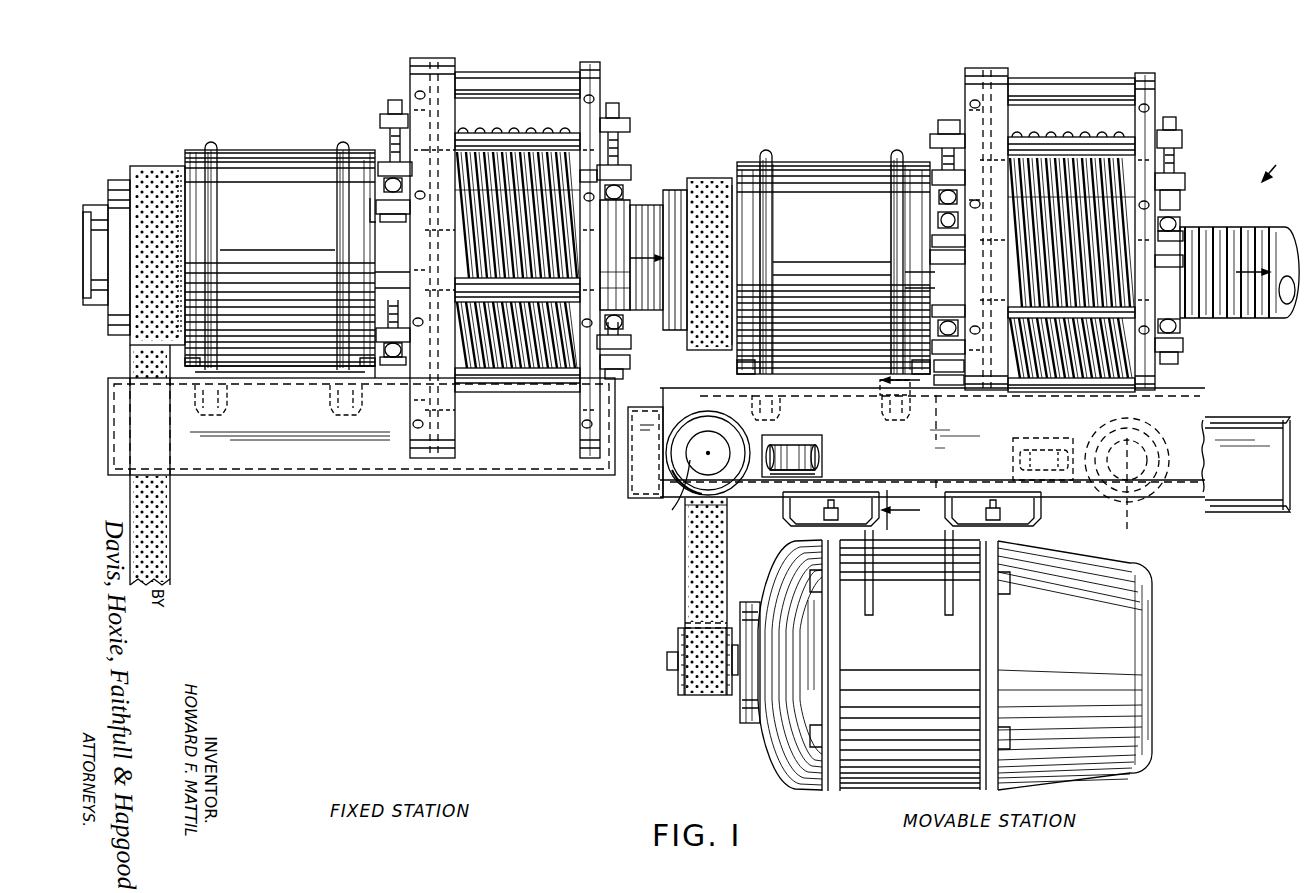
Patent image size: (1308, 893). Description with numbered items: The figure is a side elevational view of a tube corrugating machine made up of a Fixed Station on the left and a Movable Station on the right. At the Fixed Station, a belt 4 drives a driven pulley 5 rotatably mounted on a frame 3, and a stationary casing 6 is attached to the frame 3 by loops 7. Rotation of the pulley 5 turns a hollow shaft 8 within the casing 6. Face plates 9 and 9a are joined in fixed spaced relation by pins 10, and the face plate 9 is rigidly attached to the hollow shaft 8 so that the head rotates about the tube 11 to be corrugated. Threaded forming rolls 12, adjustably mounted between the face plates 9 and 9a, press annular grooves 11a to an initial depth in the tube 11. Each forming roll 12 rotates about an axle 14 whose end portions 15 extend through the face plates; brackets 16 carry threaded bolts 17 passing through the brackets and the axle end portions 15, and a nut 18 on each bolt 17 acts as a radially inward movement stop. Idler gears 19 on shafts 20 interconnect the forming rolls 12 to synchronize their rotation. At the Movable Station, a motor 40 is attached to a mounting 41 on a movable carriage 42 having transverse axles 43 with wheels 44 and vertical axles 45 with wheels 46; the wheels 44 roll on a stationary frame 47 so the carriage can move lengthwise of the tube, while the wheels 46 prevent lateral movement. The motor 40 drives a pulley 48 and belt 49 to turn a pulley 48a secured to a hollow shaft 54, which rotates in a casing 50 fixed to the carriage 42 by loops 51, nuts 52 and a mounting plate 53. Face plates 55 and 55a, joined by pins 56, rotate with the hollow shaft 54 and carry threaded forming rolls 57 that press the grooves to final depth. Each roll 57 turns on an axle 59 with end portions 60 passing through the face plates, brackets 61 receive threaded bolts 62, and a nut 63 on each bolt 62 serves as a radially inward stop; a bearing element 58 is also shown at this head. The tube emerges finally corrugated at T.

The frame 3 is at (208, 462).
The belt 4 is at (168, 530).
The driven pulley 5 is at (135, 170).
The stationary casing 6 is at (277, 154).
The loops 7 is at (212, 143).
The hollow shaft 8 is at (379, 155).
The face plate 9 is at (430, 58).
The face plate 9a is at (590, 65).
The pins 10 is at (508, 75).
The tube 11 is at (100, 210).
The annular grooves 11a is at (453, 276).
The threaded forming rolls 12 is at (548, 135).
The axle 14 is at (595, 176).
The axle end portions 15 is at (386, 140).
The brackets 16 is at (392, 116).
The threaded bolts 17 is at (610, 106).
The nut 18 is at (606, 197).
The idler gears 19 is at (458, 118).
The shafts 20 is at (519, 132).
The motor 40 is at (892, 780).
The mounting 41 is at (1038, 522).
The movable frame or carriage 42 is at (1174, 500).
The transverse axles 43 is at (691, 462).
The wheels 44 is at (722, 486).
The vertical axles 45 is at (816, 468).
The wheels 46 is at (818, 450).
The stationary frame 47 is at (675, 504).
The pulley 48 is at (678, 684).
The pulley 48a is at (683, 184).
The belt 49 is at (688, 578).
The casing 50 is at (837, 158).
The loops 51 is at (773, 152).
The nuts 52 is at (776, 415).
The mounting plate 53 is at (870, 386).
The hollow shaft 54 is at (936, 262).
The face plate 55 is at (978, 70).
The face plate 55a is at (1151, 79).
The pins 56 is at (1071, 80).
The threaded forming rolls 57 is at (1040, 140).
The bearing 58 is at (978, 300).
The axle 59 is at (1136, 182).
The axle end portions 60 is at (1185, 186).
The brackets 61 is at (1182, 139).
The threaded bolts 62 is at (1170, 117).
The nut 63 is at (1178, 202).
The finally corrugated tube T is at (1276, 164).